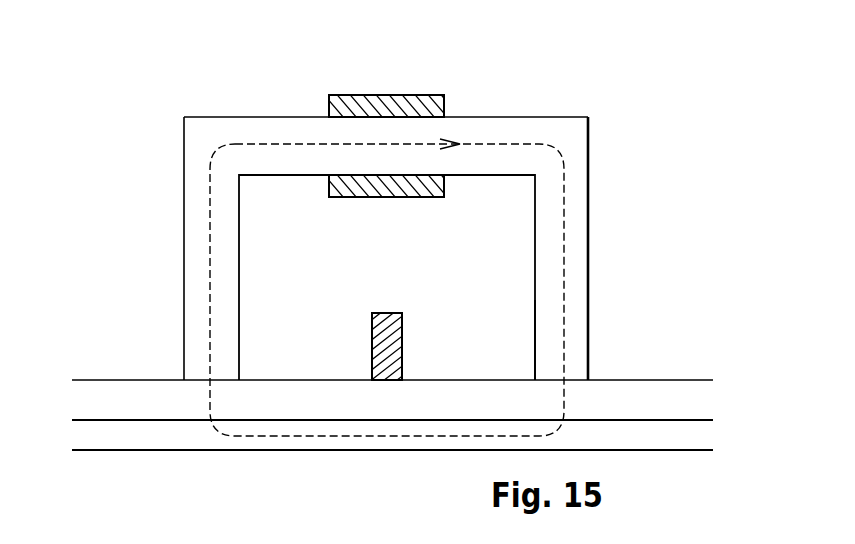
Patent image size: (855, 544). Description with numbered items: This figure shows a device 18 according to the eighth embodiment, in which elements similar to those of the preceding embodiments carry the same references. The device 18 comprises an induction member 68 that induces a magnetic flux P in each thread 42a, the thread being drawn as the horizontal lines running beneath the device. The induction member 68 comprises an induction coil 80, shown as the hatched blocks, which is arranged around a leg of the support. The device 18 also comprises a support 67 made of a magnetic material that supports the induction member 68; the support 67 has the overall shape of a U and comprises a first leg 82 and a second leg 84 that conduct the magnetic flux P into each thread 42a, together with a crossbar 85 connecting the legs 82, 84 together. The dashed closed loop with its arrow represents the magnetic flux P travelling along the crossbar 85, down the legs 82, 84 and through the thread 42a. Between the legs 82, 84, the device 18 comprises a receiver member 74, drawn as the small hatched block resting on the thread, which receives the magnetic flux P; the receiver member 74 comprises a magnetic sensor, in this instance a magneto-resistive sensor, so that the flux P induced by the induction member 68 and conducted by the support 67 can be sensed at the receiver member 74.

The device 18 is at (138, 248).
The first leg 82 is at (195, 237).
The second leg 84 is at (578, 279).
The crossbar 85 is at (305, 140).
The support 67 is at (578, 160).
The magnetic flux P is at (536, 145).
The induction member 68 is at (395, 118).
The induction coil 80 is at (401, 112).
The receiver member 74 is at (403, 340).
The thread 42a is at (643, 435).